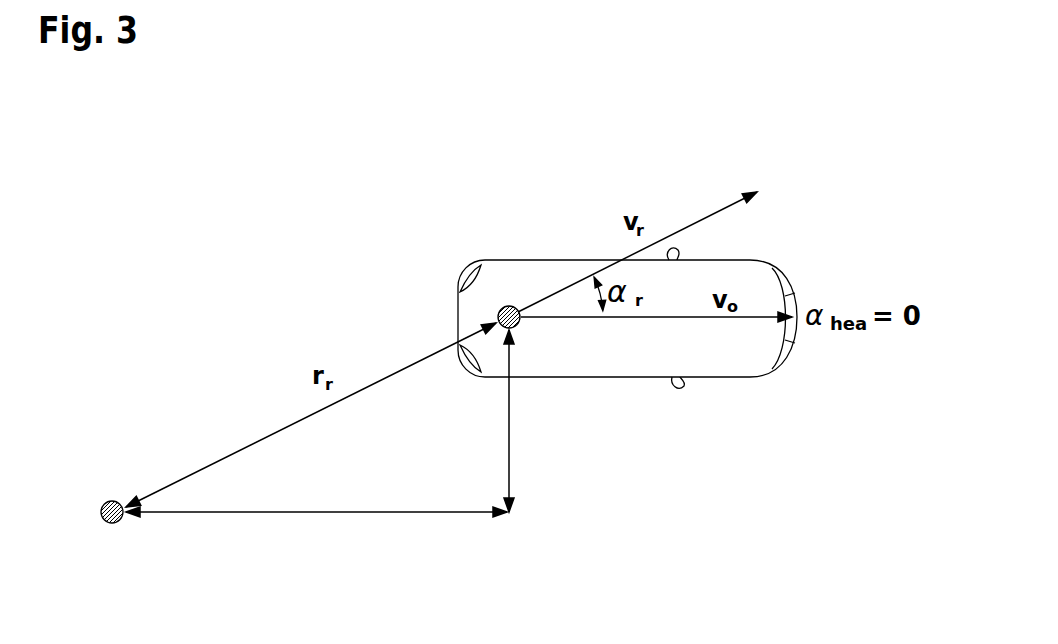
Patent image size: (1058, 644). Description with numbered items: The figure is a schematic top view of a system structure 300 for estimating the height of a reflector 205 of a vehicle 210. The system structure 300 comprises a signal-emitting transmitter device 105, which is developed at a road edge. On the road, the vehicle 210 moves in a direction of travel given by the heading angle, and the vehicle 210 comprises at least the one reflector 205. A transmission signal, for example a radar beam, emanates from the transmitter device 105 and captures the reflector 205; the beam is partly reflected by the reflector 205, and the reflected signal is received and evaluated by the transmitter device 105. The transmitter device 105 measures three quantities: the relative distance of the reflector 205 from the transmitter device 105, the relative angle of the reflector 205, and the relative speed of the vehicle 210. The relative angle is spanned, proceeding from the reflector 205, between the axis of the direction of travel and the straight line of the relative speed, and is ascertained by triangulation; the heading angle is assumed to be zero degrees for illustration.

The system structure 300 is at (684, 130).
The vehicle 210 is at (632, 378).
The reflector 205 is at (509, 306).
The transmitter device 105 is at (110, 501).